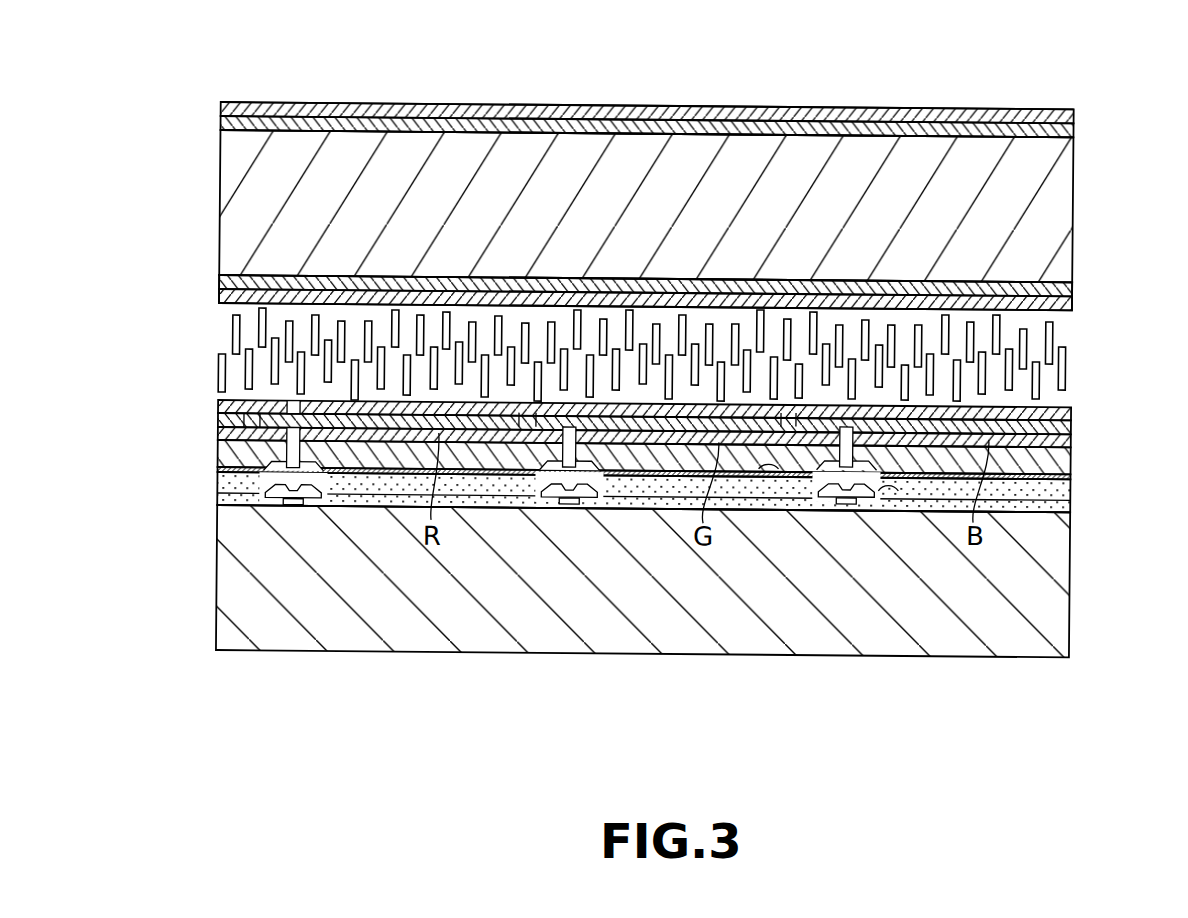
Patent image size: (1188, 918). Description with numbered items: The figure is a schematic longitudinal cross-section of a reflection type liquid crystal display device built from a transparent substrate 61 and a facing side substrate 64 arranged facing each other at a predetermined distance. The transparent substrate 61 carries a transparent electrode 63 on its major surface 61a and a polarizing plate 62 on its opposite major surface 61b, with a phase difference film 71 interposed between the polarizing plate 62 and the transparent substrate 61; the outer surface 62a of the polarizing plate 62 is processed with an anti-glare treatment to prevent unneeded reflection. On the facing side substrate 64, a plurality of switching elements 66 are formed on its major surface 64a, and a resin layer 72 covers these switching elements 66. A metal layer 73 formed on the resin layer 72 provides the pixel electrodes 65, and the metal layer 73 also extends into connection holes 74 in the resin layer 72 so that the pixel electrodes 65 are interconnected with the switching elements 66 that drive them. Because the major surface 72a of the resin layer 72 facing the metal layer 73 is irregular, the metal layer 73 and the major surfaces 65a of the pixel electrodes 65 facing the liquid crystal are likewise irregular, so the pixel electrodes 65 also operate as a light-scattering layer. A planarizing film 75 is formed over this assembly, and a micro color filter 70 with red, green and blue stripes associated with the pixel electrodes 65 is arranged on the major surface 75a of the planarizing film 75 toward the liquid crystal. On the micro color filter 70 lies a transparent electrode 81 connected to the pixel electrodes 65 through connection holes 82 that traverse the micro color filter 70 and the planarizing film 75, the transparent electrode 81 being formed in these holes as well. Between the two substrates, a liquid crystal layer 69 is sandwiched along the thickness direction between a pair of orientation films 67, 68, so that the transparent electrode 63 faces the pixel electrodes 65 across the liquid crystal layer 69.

The transparent substrate 61 is at (232, 159).
The major surface of transparent substrate 61a is at (243, 284).
The opposite major surface of transparent substrate 61b is at (329, 129).
The polarizing plate 62 is at (398, 112).
The surface of polarizing plate 62a is at (865, 115).
The transparent electrode 63 is at (237, 303).
The facing side substrate 64 is at (232, 582).
The major surface of facing side substrate 64a is at (492, 506).
The pixel electrodes 65 is at (400, 471).
The irregular major surfaces of pixel electrodes 65a is at (770, 462).
The switching elements 66 is at (293, 523).
The orientation film 67 is at (1075, 294).
The orientation film 68 is at (1078, 401).
The liquid crystal layer 69 is at (1078, 362).
The micro color filter 70 is at (1075, 429).
The phase difference film 71 is at (1075, 124).
The resin layer 72 is at (1060, 482).
The major surface of resin layer 72a is at (1037, 482).
The metal layer 73 is at (1066, 462).
The connection holes 74 is at (892, 476).
The planarizing film 75 is at (240, 455).
The major surface of planarizing film 75a is at (262, 432).
The transparent electrode 81 is at (295, 425).
The connection holes 82 is at (340, 470).